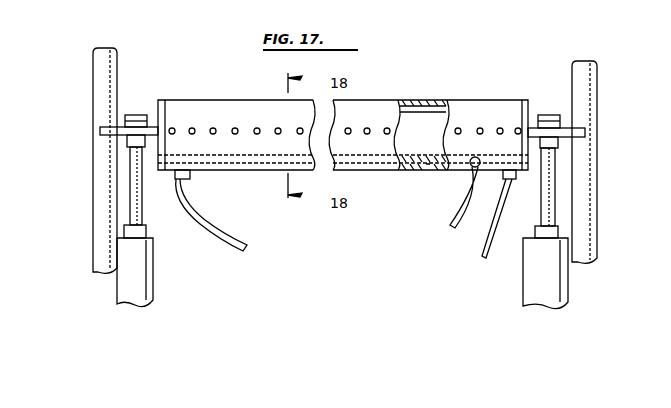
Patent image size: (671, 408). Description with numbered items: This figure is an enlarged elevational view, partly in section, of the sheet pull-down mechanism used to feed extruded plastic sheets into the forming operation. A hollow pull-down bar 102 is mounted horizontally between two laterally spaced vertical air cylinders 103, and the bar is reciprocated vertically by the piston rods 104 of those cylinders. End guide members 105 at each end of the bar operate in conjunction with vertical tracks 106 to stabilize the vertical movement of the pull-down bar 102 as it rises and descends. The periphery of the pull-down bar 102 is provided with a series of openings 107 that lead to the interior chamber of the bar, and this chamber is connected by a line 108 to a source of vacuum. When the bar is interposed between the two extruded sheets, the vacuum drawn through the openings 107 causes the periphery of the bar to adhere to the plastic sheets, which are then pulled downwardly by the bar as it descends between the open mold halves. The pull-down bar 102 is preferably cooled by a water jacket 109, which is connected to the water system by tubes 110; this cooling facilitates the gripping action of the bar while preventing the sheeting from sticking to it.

The pull-down bar 102 is at (183, 110).
The air cylinders 103 is at (143, 291).
The piston rods 104 is at (135, 184).
The end guide members 105 is at (100, 130).
The vertical tracks 106 is at (102, 78).
The openings 107 is at (257, 128).
The line 108 is at (455, 213).
The water jacket 109 is at (222, 174).
The tubes 110 is at (222, 236).